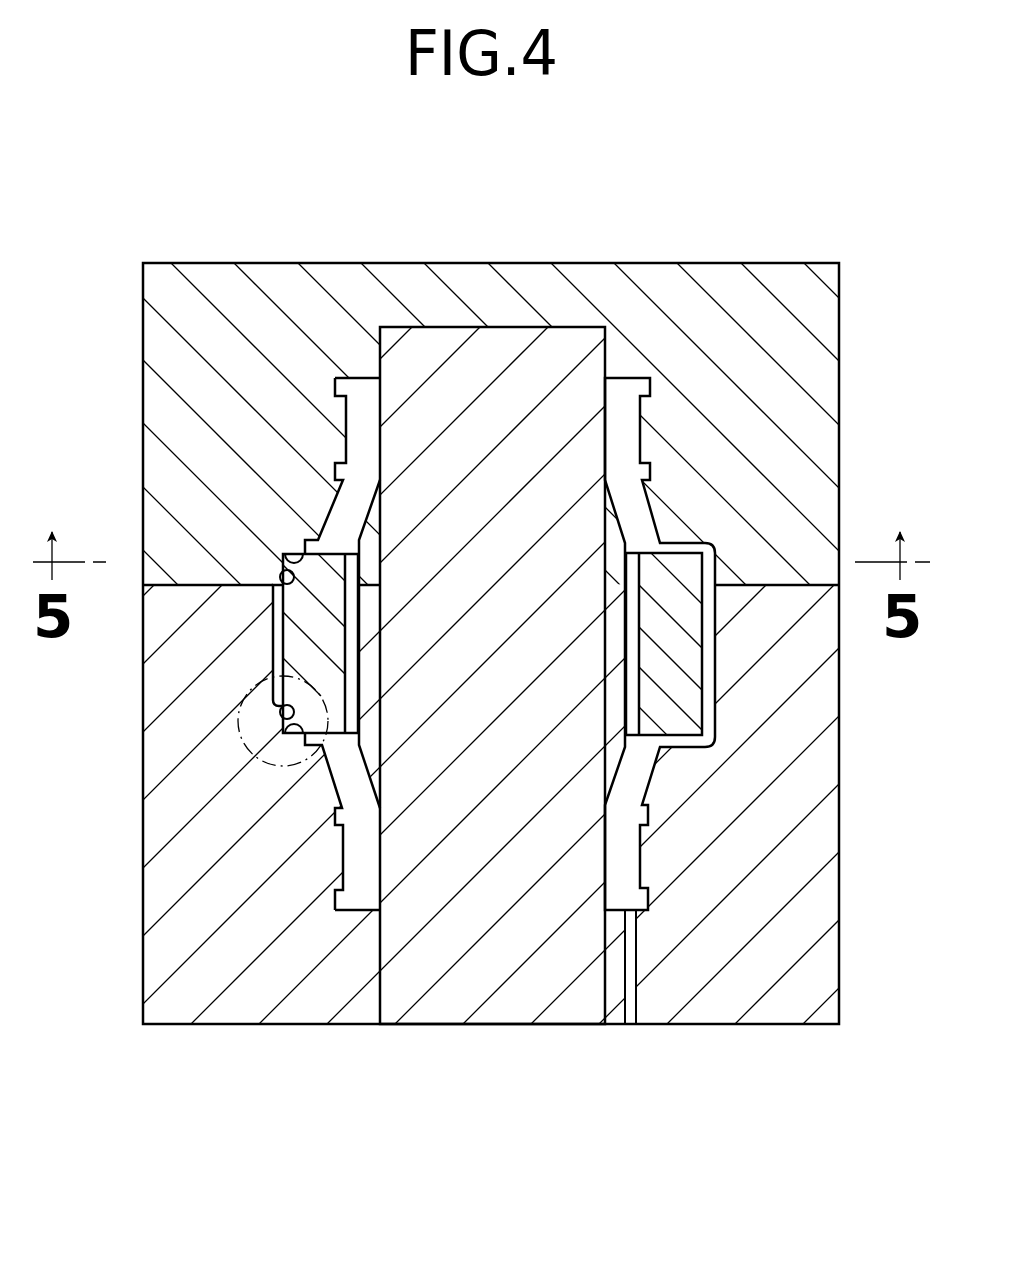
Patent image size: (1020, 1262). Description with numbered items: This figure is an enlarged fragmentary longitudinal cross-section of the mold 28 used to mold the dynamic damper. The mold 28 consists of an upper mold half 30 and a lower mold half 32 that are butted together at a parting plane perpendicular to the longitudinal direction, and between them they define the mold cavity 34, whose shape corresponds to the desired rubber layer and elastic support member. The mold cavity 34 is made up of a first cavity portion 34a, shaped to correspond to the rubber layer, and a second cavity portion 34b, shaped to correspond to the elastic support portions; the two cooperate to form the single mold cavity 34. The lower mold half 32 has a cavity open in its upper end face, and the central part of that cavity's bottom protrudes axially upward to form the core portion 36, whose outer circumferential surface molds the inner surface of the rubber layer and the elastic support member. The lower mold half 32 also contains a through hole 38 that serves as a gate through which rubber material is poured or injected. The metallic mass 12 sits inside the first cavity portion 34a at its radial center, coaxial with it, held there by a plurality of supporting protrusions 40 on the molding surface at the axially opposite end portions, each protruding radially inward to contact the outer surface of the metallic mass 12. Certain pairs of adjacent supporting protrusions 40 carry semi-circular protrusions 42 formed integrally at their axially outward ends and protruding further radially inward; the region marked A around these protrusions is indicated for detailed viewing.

The metallic mass 12 is at (683, 570).
The mold 28 is at (783, 222).
The upper mold half 30 is at (826, 337).
The lower mold half 32 is at (808, 705).
The mold cavity 34 is at (658, 772).
The first cavity portion 34a is at (273, 647).
The second cavity portion 34b is at (360, 415).
The core portion 36 is at (497, 342).
The through hole 38 is at (630, 1010).
The supporting protrusion 40 is at (283, 578).
The semi-circular protrusion 42 is at (288, 561).
The detail area A is at (278, 778).